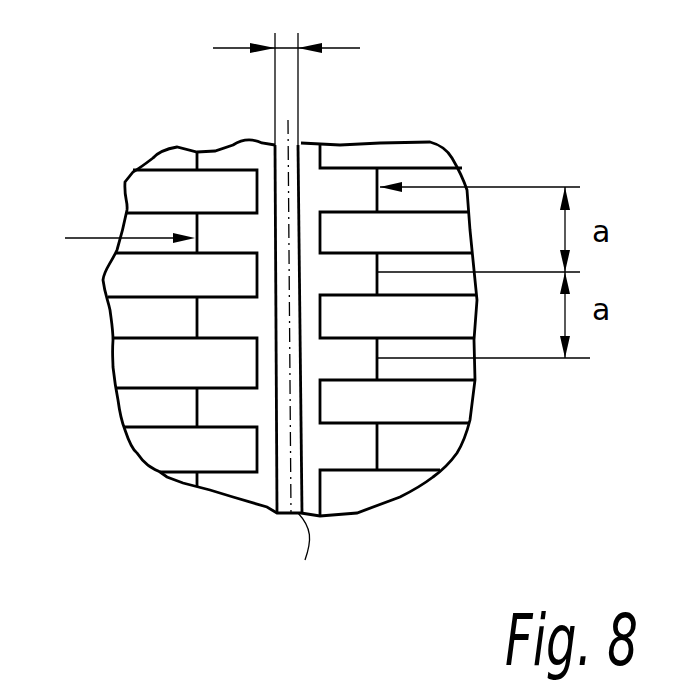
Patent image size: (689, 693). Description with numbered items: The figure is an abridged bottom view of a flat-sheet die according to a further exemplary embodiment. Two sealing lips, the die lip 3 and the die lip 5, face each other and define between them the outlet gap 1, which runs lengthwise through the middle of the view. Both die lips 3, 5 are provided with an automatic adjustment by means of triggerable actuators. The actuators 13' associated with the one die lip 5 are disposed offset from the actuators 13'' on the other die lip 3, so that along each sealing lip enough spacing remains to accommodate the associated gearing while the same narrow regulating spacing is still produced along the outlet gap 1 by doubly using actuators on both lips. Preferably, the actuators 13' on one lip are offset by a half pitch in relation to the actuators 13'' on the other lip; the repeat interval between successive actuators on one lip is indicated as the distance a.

The outlet gap 1 is at (291, 513).
The die lip 3 is at (167, 337).
The die lip 5 is at (424, 352).
The actuators 13' is at (433, 327).
The actuators 13'' is at (145, 319).